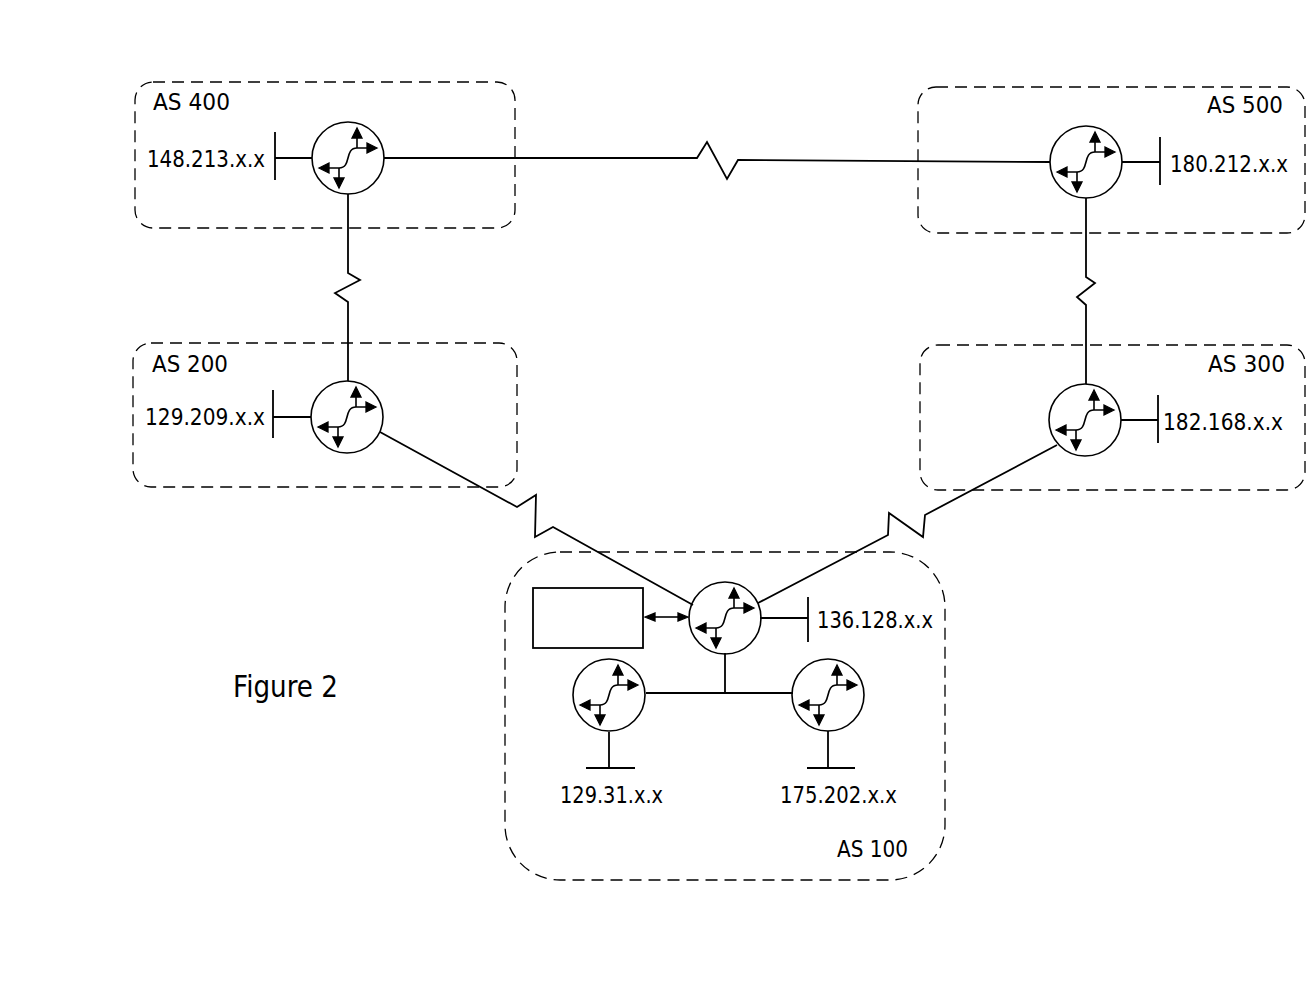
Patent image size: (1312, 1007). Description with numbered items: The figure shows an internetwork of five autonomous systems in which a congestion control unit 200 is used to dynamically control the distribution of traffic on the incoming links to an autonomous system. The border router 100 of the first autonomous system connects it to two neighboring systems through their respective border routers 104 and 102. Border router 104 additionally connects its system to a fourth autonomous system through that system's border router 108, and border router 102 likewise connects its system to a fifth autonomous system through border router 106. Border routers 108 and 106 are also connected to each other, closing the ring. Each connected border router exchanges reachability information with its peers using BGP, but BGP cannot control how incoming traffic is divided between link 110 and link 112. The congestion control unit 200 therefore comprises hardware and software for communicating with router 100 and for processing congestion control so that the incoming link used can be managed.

The border router 100 is at (725, 583).
The border router 102 is at (1085, 456).
The border router 104 is at (384, 417).
The border router 106 is at (1086, 126).
The border router 108 is at (348, 122).
The link 110 is at (957, 498).
The link 112 is at (500, 500).
The congestion control unit 200 is at (533, 615).